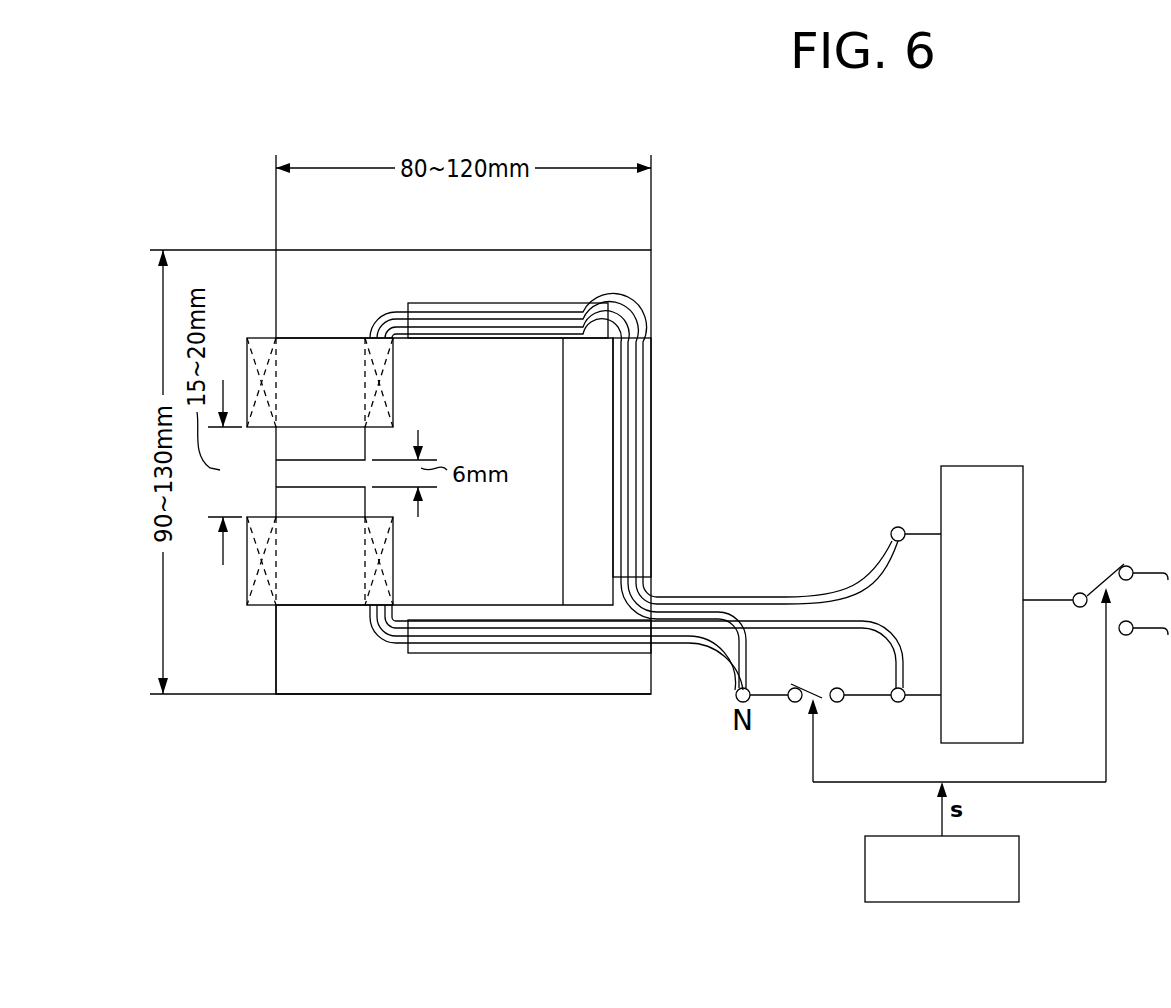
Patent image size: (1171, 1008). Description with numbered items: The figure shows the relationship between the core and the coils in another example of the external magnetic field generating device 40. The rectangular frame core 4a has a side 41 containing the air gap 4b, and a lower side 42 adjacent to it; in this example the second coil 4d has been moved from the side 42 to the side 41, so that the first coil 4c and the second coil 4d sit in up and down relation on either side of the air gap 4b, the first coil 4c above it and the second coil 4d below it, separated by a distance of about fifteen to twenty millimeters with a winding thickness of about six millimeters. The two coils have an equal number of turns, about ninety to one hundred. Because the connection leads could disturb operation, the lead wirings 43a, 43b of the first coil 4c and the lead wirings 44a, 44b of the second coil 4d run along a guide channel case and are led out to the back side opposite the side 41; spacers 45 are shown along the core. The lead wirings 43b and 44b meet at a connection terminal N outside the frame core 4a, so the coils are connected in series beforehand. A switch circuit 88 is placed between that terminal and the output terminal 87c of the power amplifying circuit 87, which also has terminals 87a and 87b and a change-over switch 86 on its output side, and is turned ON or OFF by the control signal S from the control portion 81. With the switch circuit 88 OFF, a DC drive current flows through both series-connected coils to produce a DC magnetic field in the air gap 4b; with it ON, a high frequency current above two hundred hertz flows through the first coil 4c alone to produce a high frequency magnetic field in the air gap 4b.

The external magnetic field generating device 40 is at (750, 335).
The frame core 4a is at (640, 260).
The air gap 4b is at (322, 474).
The first coil 4c is at (395, 365).
The second coil 4d is at (395, 568).
The side 41 is at (277, 640).
The lower side 42 is at (495, 682).
The lead wiring 43a is at (627, 308).
The lead wiring 43b is at (627, 392).
The lead wiring 44a is at (685, 630).
The lead wiring 44b is at (588, 643).
The spacer 45 is at (478, 303).
The control portion 81 is at (1019, 866).
The changeover switch 86 is at (1057, 562).
The power amplifying circuit 87 is at (990, 466).
The output terminal 87a is at (1078, 608).
The input terminal 87b is at (896, 527).
The output terminal 87c is at (897, 702).
The switch circuit 88 is at (800, 716).